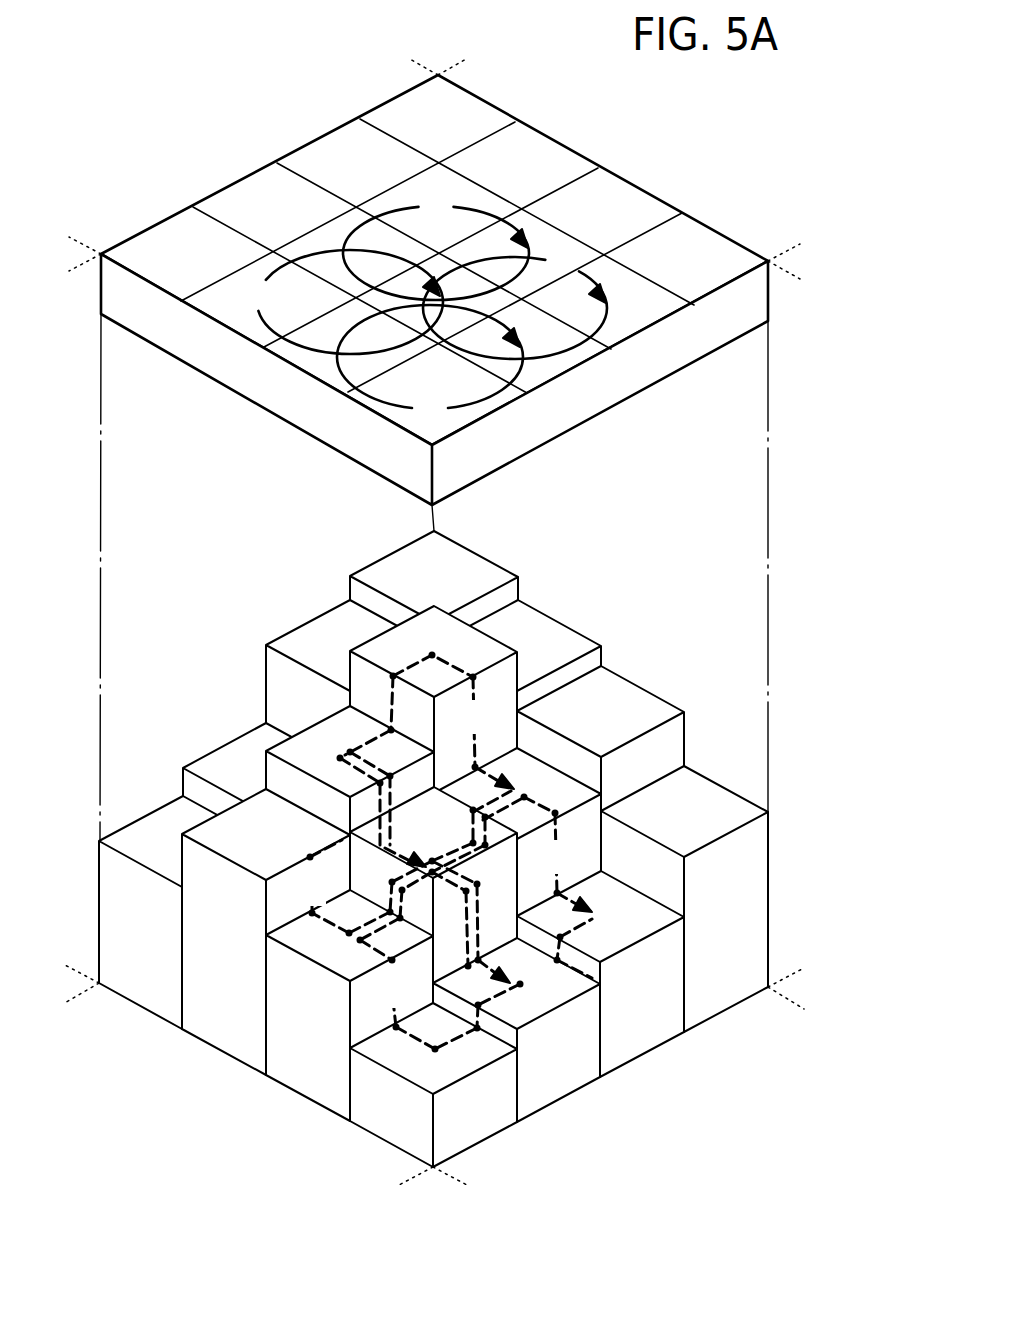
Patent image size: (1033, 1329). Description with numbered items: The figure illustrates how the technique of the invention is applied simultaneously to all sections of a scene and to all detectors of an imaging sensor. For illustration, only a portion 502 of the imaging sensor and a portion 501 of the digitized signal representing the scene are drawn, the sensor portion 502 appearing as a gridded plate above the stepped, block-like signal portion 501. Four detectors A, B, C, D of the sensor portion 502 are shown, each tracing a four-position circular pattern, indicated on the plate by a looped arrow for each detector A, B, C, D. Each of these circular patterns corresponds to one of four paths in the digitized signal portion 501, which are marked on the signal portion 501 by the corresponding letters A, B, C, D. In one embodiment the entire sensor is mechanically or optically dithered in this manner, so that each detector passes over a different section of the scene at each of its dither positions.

The portion of digitized signal 501 is at (790, 845).
The portion of imaging sensor 502 is at (737, 218).
The detector A is at (436, 246).
The detector B is at (515, 306).
The detector C is at (430, 363).
The detector D is at (349, 302).